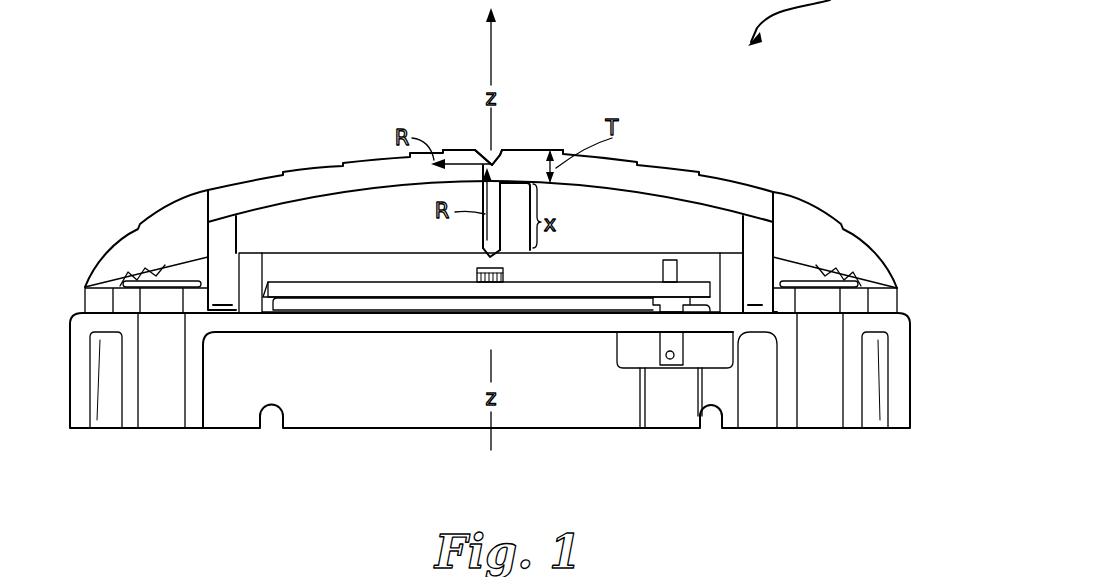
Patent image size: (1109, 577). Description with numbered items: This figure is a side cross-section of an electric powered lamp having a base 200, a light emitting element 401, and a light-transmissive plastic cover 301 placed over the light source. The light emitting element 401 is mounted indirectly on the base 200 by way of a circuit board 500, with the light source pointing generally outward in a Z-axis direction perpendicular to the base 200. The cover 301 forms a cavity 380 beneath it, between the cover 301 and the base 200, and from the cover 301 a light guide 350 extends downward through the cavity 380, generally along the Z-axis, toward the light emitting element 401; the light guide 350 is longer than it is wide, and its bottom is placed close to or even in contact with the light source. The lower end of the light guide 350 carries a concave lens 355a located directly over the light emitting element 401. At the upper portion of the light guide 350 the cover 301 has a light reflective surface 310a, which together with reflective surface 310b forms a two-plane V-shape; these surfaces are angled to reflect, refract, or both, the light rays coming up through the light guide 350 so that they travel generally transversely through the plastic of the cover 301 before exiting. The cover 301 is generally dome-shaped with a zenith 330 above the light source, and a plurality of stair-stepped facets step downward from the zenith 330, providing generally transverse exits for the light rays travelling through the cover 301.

The base 200 is at (930, 363).
The cover 301 is at (333, 170).
The light reflective surface 310a is at (502, 152).
The reflective surface 310b is at (475, 150).
The zenith 330 is at (493, 158).
The light guide 350 is at (483, 249).
The concave lens 355a is at (497, 254).
The cavity 380 is at (675, 236).
The light emitting element 401 is at (506, 278).
The circuit board 500 is at (333, 282).